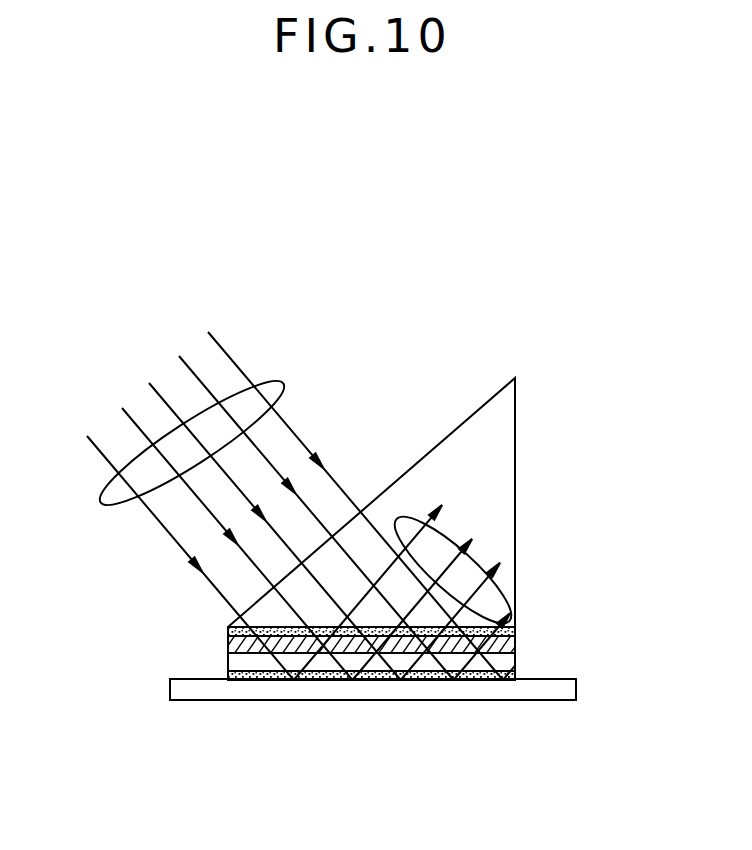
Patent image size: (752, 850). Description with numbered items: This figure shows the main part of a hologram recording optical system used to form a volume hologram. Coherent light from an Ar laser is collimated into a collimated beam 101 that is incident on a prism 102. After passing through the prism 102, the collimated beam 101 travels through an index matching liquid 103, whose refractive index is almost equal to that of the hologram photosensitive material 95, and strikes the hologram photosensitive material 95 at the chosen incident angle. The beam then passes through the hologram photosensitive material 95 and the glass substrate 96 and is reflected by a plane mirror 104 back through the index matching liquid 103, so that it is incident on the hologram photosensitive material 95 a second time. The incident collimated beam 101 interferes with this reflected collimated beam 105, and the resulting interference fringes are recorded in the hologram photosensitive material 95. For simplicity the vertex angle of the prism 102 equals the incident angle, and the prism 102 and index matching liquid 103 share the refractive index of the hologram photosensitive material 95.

The collimated beam 101 is at (103, 509).
The prism 102 is at (500, 489).
The index matching liquid 103 is at (517, 624).
The plane mirror 104 is at (561, 690).
The reflected collimated beam 105 is at (445, 535).
The hologram photosensitive material 95 is at (517, 641).
The glass substrate 96 is at (517, 662).